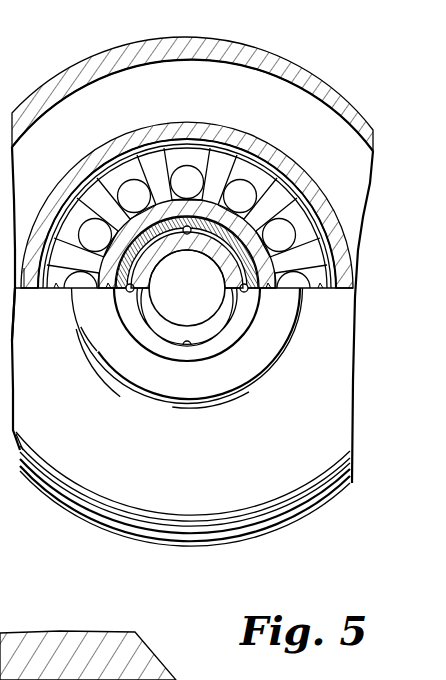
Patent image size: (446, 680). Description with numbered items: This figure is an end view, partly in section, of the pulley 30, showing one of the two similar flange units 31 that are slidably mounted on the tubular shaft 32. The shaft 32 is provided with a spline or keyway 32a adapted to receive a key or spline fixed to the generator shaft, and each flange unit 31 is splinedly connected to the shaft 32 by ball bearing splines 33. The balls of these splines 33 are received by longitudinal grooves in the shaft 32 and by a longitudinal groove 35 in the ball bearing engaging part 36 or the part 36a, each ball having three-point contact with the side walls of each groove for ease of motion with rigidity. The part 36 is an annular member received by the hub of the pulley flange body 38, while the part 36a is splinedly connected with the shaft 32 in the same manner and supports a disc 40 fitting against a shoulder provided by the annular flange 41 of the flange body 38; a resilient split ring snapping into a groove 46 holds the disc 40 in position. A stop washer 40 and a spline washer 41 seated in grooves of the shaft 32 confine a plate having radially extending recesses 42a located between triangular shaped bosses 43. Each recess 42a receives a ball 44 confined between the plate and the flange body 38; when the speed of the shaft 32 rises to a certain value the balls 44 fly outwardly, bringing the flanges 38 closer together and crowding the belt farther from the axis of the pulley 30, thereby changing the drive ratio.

The pulley 30 is at (284, 26).
The flange unit 31 is at (92, 58).
The tubular shaft 32 is at (151, 281).
The spline or keyway 32a is at (213, 258).
The ball bearing spline 33 is at (127, 292).
The longitudinal groove 35 is at (92, 679).
The ball bearing engaging part 36 is at (117, 228).
The ball bearing engaging part 36a is at (175, 388).
The pulley flange body 38 is at (33, 262).
The stop washer 40 is at (118, 498).
The spline washer 41 is at (147, 148).
The radially extending recess 42a is at (188, 153).
The triangular shaped boss 43 is at (229, 152).
The ball 44 is at (281, 160).
The groove 46 is at (155, 518).